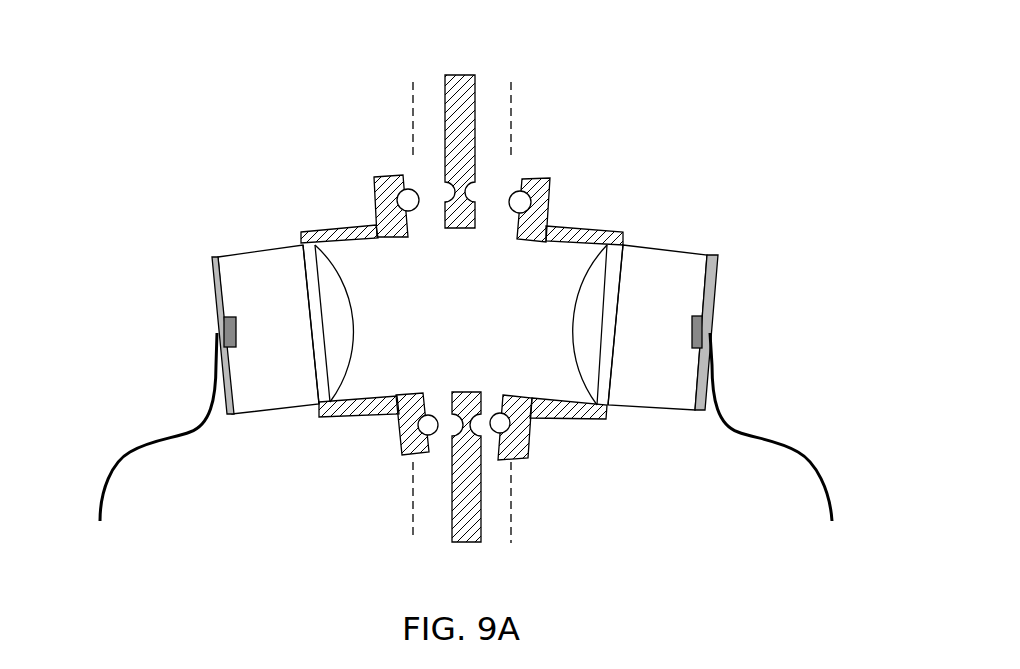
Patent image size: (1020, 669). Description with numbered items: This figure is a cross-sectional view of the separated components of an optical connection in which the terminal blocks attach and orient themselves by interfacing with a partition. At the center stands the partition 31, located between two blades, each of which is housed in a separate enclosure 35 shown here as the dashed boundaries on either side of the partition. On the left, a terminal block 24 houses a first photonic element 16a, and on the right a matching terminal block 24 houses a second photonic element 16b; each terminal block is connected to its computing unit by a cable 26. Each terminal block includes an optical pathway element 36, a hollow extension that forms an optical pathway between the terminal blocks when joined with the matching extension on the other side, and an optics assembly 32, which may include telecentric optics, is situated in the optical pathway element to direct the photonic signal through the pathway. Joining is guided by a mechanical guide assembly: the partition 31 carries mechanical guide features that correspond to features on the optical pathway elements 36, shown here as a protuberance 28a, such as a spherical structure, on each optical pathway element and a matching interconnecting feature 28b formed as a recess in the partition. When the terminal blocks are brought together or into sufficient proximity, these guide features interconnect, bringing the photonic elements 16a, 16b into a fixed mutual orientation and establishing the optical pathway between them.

The first photonic element 16a is at (227, 323).
The second photonic element 16b is at (710, 320).
The terminal block 24 is at (227, 253).
The cable 26 is at (110, 470).
The protuberance 28a is at (405, 199).
The interconnecting feature 28b is at (447, 192).
The partition 31 is at (459, 75).
The optics assembly 32 is at (355, 333).
The enclosure 35 is at (409, 100).
The optical pathway element 36 is at (350, 225).